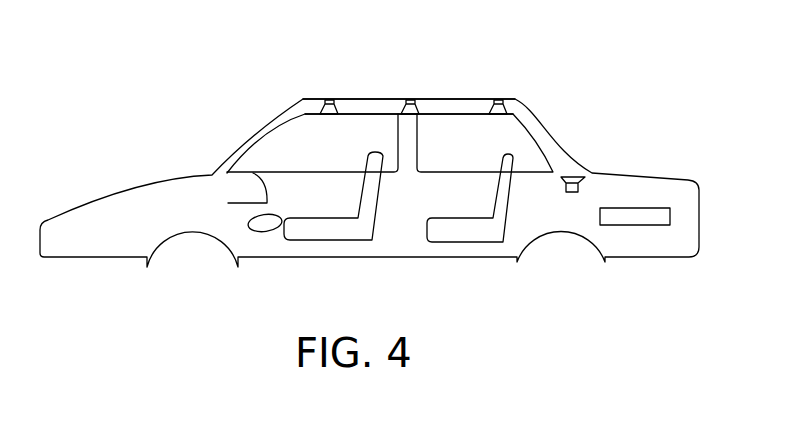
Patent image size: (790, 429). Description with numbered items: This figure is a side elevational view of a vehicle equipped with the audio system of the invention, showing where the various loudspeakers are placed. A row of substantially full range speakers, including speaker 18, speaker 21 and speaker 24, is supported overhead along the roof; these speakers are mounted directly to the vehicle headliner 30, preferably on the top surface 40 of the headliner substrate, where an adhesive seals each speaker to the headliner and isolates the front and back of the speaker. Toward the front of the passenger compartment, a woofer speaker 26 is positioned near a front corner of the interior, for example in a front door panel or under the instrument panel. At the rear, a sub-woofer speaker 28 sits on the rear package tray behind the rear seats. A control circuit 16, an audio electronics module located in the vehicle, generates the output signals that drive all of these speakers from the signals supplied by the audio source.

The control circuit 16 is at (676, 207).
The speaker 18 is at (329, 99).
The speaker 21 is at (413, 101).
The speaker 24 is at (503, 98).
The speaker 26 is at (256, 232).
The speaker 28 is at (586, 178).
The headliner 30 is at (363, 99).
The top surface 40 is at (457, 114).